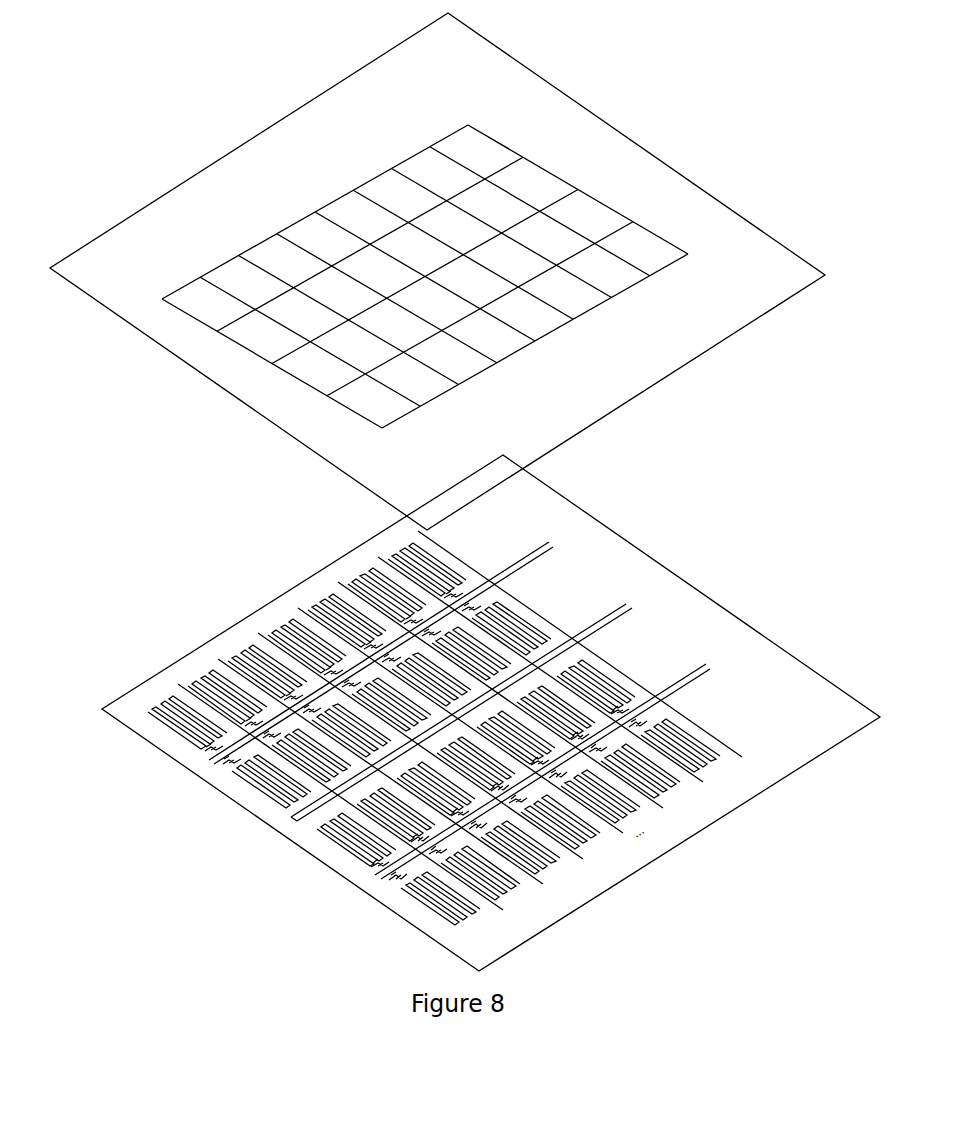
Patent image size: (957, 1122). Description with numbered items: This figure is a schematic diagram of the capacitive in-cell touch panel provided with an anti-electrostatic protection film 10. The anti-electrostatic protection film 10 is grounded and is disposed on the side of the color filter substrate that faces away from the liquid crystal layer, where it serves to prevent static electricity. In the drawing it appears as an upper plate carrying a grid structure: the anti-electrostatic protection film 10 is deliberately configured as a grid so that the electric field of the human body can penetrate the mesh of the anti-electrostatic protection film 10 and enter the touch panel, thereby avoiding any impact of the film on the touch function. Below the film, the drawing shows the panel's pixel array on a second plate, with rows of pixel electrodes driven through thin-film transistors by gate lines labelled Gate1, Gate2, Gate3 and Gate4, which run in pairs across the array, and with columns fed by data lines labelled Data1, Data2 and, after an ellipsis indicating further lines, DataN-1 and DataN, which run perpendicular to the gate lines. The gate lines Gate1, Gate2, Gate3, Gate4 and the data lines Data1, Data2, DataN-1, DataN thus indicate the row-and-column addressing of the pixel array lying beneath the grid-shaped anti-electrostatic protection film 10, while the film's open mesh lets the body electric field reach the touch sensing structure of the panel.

The anti-electrostatic protection film 10 is at (490, 245).
The first gate line Gate1 is at (394, 637).
The second gate line Gate2 is at (401, 646).
The third gate line Gate3 is at (556, 751).
The fourth gate line Gate4 is at (564, 759).
The first data line Data1 is at (352, 808).
The second data line Data2 is at (394, 782).
The (N-1)th data line DataN-1 is at (560, 680).
The Nth data line DataN is at (598, 654).